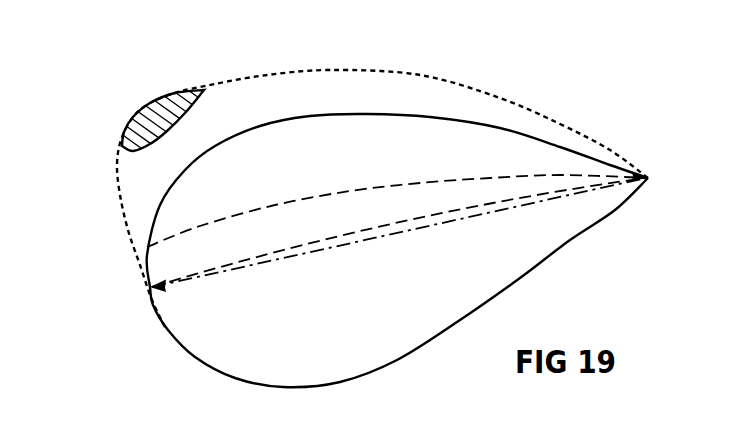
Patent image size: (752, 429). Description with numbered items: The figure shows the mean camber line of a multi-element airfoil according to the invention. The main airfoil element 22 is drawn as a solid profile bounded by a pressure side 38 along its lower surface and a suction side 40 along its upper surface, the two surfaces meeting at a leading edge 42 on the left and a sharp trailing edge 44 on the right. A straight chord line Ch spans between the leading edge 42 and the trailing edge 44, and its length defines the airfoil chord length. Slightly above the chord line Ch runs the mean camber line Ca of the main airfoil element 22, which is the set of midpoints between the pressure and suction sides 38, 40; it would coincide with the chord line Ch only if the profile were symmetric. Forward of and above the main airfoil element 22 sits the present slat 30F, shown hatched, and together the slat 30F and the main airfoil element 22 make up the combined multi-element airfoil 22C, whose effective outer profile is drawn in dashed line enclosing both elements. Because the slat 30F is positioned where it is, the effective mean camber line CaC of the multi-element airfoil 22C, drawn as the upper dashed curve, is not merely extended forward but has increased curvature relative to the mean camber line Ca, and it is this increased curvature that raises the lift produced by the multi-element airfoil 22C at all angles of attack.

The main airfoil element 22 is at (397, 262).
The multi-element airfoil 22C is at (370, 72).
The slat 30F is at (162, 112).
The pressure side 38 is at (397, 360).
The suction side 40 is at (416, 118).
The leading edge 42 is at (152, 289).
The trailing edge 44 is at (650, 178).
The mean camber line Ca is at (410, 220).
The effective mean camber line of the multi-element airfoil CaC is at (276, 205).
The chord line Ch is at (478, 218).